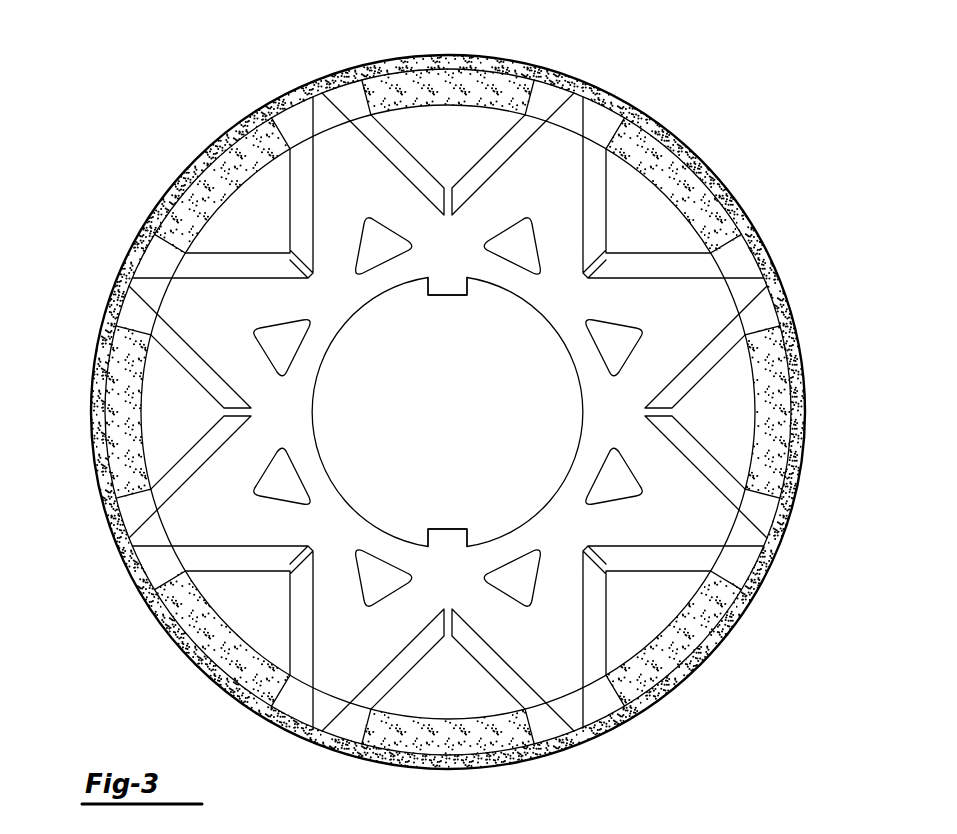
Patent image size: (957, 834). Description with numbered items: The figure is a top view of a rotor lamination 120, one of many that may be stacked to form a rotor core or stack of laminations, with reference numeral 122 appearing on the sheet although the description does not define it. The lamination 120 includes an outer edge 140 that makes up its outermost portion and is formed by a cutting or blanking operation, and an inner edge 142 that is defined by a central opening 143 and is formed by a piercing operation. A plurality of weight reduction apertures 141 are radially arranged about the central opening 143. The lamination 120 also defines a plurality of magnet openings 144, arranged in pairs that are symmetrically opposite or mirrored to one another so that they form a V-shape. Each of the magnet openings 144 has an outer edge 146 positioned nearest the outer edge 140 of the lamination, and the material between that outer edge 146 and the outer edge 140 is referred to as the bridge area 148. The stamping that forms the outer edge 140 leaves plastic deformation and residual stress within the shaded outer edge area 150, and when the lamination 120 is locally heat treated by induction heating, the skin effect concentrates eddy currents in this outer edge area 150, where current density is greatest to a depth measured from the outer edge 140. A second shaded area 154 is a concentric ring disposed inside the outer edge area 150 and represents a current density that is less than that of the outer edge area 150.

The rotor lamination 120 is at (208, 150).
The rotor core 122 is at (568, 827).
The outer edge 140 is at (110, 310).
The weight reduction apertures 141 is at (491, 250).
The inner edge 142 is at (340, 330).
The central opening 143 is at (462, 484).
The magnet openings 144 is at (493, 156).
The outer edge of the magnet openings 146 is at (351, 84).
The bridge area 148 is at (608, 102).
The outer edge area 150 is at (167, 207).
The second shaded area 154 is at (123, 427).